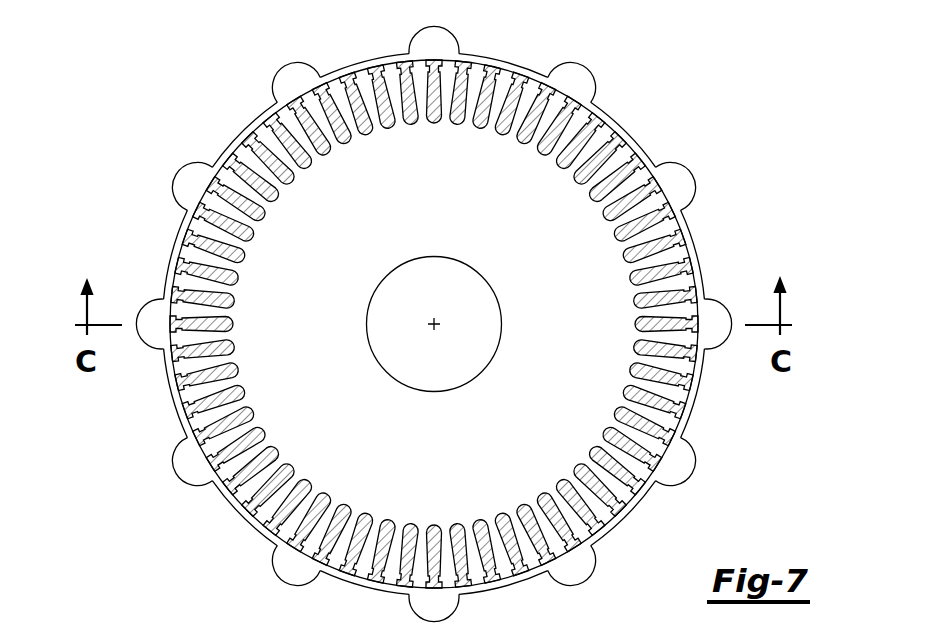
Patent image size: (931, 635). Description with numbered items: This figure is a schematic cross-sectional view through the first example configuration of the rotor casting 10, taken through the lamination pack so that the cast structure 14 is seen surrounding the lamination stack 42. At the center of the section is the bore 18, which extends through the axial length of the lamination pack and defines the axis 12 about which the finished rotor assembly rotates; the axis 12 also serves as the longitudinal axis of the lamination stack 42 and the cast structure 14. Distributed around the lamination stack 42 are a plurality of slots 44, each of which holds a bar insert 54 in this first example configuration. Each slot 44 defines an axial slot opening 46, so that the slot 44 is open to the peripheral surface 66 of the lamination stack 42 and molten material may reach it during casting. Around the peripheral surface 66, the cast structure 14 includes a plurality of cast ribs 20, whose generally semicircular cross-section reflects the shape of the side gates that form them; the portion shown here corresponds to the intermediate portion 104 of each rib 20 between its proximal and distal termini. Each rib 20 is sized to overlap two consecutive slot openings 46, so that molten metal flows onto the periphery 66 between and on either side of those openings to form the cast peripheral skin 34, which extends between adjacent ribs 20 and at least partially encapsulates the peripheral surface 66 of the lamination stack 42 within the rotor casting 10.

The rotor casting 10 is at (465, 315).
The axis 12 is at (437, 327).
The cast structure 14 is at (465, 315).
The bore 18 is at (396, 350).
The cast ribs 20 is at (468, 315).
The intermediate portion 104 is at (458, 42).
The cast peripheral skin 34 is at (623, 128).
The lamination stack 42 is at (446, 211).
The slots 44 is at (210, 352).
The axial slot opening 46 is at (185, 413).
The bar inserts 54 is at (213, 292).
The peripheral surface 66 is at (703, 280).